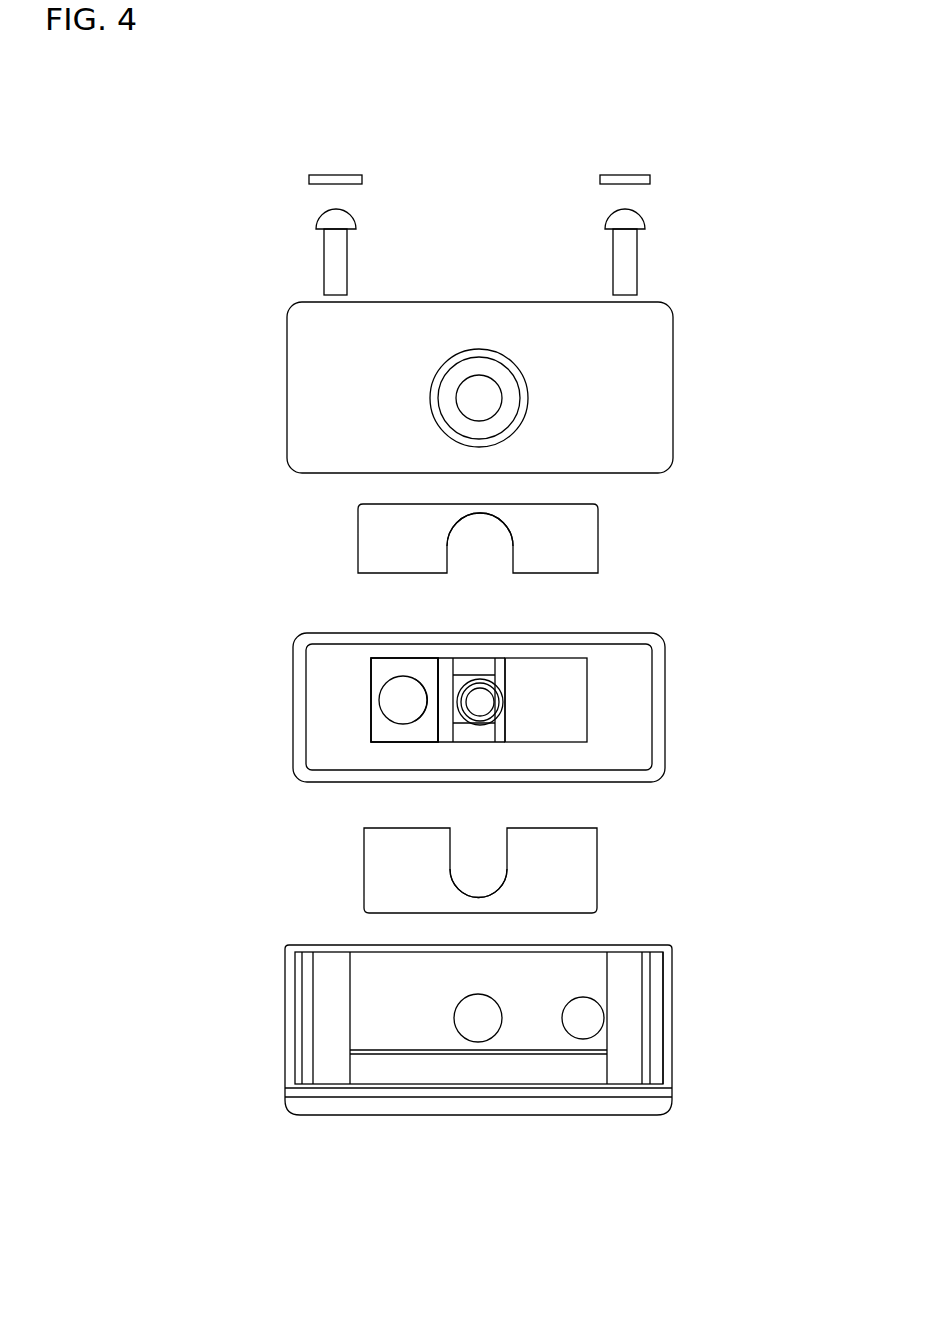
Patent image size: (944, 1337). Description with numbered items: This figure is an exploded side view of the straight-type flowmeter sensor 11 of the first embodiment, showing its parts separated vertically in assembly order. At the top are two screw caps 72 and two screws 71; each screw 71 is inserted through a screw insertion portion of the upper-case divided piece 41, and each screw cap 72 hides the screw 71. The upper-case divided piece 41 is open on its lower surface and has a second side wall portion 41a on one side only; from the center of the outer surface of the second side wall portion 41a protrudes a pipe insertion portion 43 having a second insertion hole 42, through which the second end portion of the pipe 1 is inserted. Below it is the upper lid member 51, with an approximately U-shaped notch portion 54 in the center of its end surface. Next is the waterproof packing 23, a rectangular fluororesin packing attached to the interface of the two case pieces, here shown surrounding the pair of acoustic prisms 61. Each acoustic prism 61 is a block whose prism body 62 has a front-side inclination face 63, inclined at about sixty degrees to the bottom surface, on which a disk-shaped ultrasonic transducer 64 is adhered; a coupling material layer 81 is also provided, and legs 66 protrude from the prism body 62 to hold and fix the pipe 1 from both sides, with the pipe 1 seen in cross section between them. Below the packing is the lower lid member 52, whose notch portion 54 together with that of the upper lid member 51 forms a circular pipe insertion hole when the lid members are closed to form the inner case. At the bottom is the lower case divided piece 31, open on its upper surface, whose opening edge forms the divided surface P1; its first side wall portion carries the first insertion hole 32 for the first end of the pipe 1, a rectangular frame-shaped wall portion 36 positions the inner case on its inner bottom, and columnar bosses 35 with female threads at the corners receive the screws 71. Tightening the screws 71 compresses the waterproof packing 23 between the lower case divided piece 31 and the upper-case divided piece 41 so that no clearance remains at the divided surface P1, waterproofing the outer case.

The straight-type flowmeter sensor 11 is at (182, 155).
The screw cap 72 is at (309, 179).
The screw 71 is at (333, 247).
The upper-case divided piece 41 is at (673, 363).
The second side wall portion 41a is at (375, 373).
The pipe insertion portion 43 is at (515, 368).
The second insertion hole 42 is at (477, 418).
The upper lid member 51 is at (598, 533).
The notch portion 54 is at (477, 515).
The waterproof packing 23 is at (665, 703).
The prism body 62 is at (392, 658).
The ultrasonic transducer 64 is at (398, 705).
The front-side inclination face 63 is at (385, 735).
The coupling material layer 81 is at (450, 690).
The leg 66 is at (480, 665).
The pipe 1 is at (500, 698).
The acoustic prism 61 is at (371, 675).
The lower lid member 52 is at (597, 865).
The lower case divided piece 31 is at (672, 1030).
The divided surface P1 is at (670, 993).
The boss 35 is at (330, 1062).
The wall portion 36 is at (433, 1070).
The first insertion hole 32 is at (467, 1032).